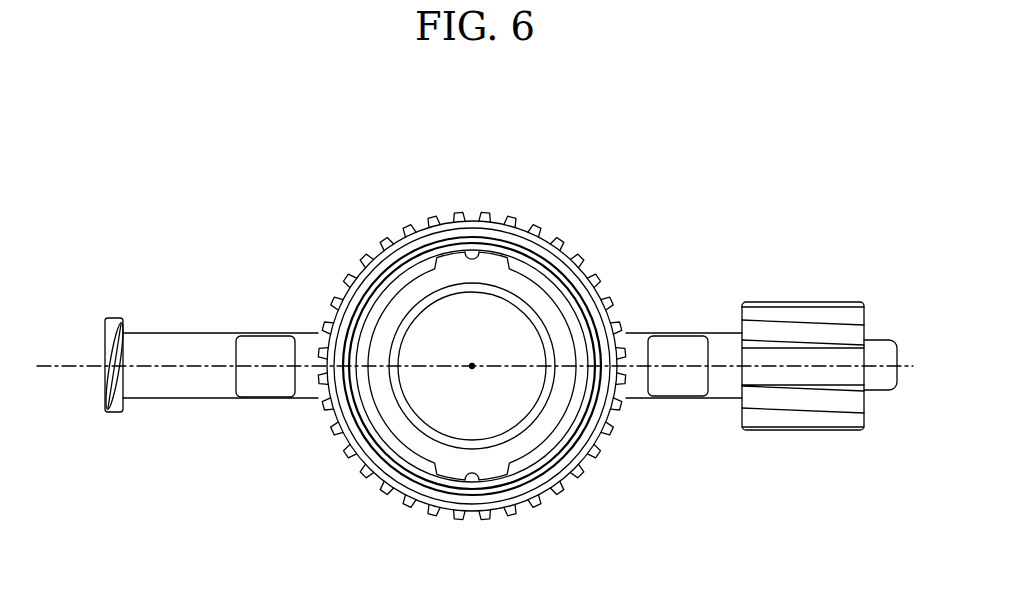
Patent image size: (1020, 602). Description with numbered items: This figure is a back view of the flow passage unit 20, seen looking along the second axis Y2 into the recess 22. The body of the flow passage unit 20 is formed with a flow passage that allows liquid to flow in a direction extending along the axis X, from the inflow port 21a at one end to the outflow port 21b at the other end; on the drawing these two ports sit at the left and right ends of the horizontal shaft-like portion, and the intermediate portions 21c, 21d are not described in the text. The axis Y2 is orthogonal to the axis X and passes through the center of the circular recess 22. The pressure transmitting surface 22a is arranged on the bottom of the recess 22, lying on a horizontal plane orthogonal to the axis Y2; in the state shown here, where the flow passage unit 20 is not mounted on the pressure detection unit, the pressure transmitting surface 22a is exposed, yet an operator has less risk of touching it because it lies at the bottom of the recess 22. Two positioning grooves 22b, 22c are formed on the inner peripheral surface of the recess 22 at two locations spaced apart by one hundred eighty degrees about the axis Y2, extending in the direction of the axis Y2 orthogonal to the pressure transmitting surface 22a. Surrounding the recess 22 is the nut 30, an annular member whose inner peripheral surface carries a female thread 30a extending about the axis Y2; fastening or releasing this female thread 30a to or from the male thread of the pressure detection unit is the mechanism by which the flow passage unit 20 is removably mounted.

The flow passage unit 20 is at (260, 193).
The inflow port 21a is at (112, 413).
The outflow port 21b is at (884, 391).
The bearing portion 21c is at (263, 398).
The bearing portion 21d is at (678, 397).
The recess 22 is at (419, 275).
The pressure transmitting surface 22a is at (430, 410).
The positioning groove 22b is at (480, 256).
The positioning groove 22c is at (467, 482).
The nut 30 is at (352, 280).
The female thread 30a is at (530, 468).
The axis X is at (47, 367).
The axis Y2 is at (472, 363).